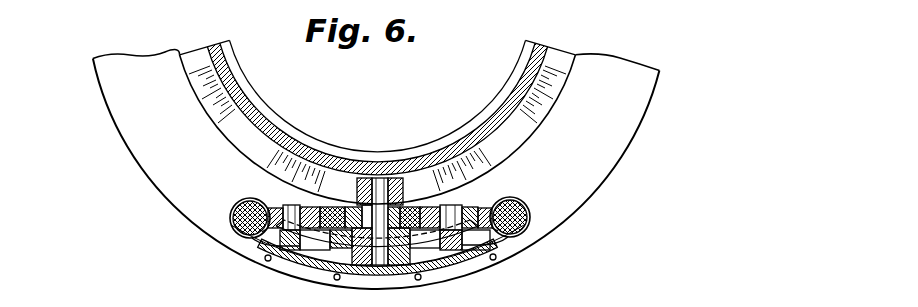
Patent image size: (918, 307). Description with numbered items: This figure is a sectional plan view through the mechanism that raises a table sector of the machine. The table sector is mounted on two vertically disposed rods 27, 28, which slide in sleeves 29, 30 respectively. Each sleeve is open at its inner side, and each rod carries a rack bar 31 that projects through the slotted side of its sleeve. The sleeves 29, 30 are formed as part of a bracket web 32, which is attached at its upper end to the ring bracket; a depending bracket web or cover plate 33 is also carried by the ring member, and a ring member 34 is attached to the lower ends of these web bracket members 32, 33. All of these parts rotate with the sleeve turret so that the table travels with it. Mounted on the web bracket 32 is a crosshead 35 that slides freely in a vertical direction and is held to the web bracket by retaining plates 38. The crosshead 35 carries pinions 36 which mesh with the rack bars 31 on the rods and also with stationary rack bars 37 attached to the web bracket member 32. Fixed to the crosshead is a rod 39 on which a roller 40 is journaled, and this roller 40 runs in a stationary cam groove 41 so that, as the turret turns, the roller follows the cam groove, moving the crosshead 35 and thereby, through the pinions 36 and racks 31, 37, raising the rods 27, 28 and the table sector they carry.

The rod 27 is at (250, 210).
The rod 28 is at (512, 206).
The sleeve 29 is at (236, 214).
The sleeve 30 is at (528, 212).
The rack bar 31 is at (500, 243).
The bracket web 32 is at (343, 207).
The cover plate 33 is at (327, 270).
The ring member 34 is at (610, 138).
The crosshead 35 is at (397, 273).
The pinion 36 is at (490, 205).
The stationary rack bar 37 is at (433, 207).
The retaining plate 38 is at (420, 258).
The rod 39 is at (380, 178).
The roller 40 is at (420, 178).
The cam groove 41 is at (537, 104).